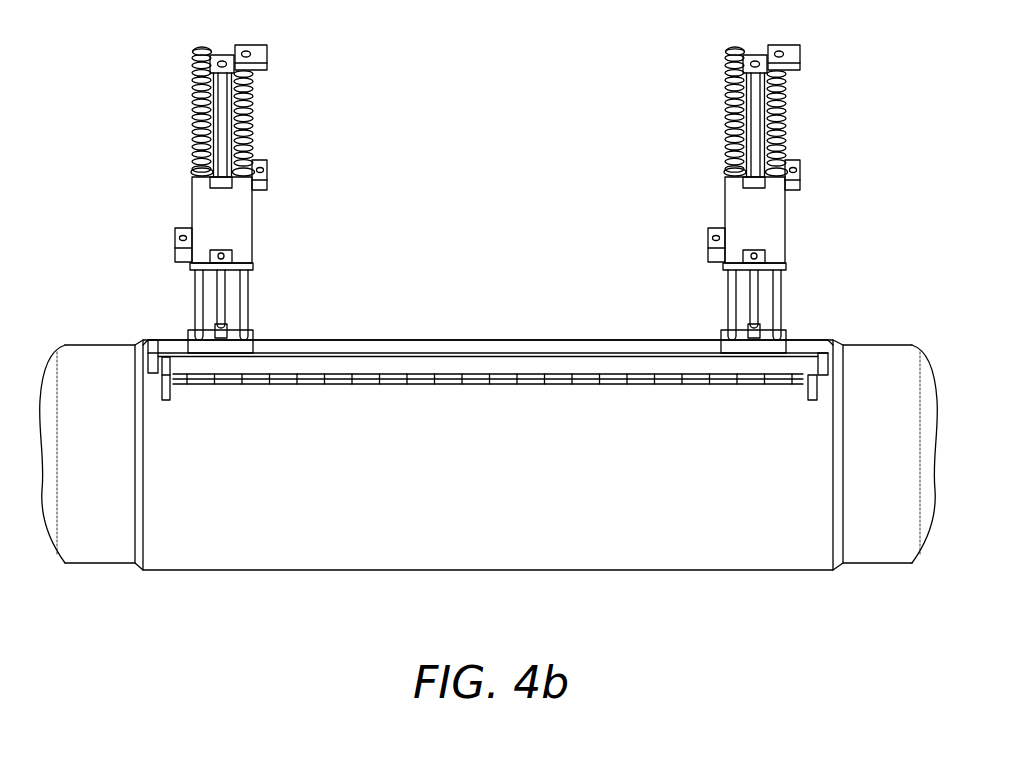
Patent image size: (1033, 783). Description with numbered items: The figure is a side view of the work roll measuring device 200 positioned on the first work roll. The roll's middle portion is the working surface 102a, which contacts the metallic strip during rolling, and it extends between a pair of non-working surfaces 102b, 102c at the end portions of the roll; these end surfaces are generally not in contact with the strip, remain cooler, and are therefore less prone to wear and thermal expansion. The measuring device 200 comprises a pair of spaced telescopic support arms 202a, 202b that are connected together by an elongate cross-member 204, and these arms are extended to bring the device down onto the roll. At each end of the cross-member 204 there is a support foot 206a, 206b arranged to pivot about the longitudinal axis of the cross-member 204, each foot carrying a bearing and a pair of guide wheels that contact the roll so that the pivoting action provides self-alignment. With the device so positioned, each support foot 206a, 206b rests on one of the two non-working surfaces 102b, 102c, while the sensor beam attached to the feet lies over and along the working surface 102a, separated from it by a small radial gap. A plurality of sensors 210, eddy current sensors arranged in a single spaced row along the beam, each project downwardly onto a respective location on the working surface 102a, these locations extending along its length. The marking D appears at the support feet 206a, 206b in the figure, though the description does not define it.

The work roll measuring device 200 is at (134, 49).
The working surface 102a is at (802, 588).
The non-working surface 102b is at (175, 588).
The non-working surface 102c is at (833, 577).
The telescopic support arm 202a is at (200, 212).
The telescopic support arm 202b is at (775, 212).
The cross-member 204 is at (586, 346).
The sensors 210 is at (386, 352).
The support foot 206a is at (166, 403).
The support foot 206b is at (814, 403).
The direction of adjustment D is at (181, 404).